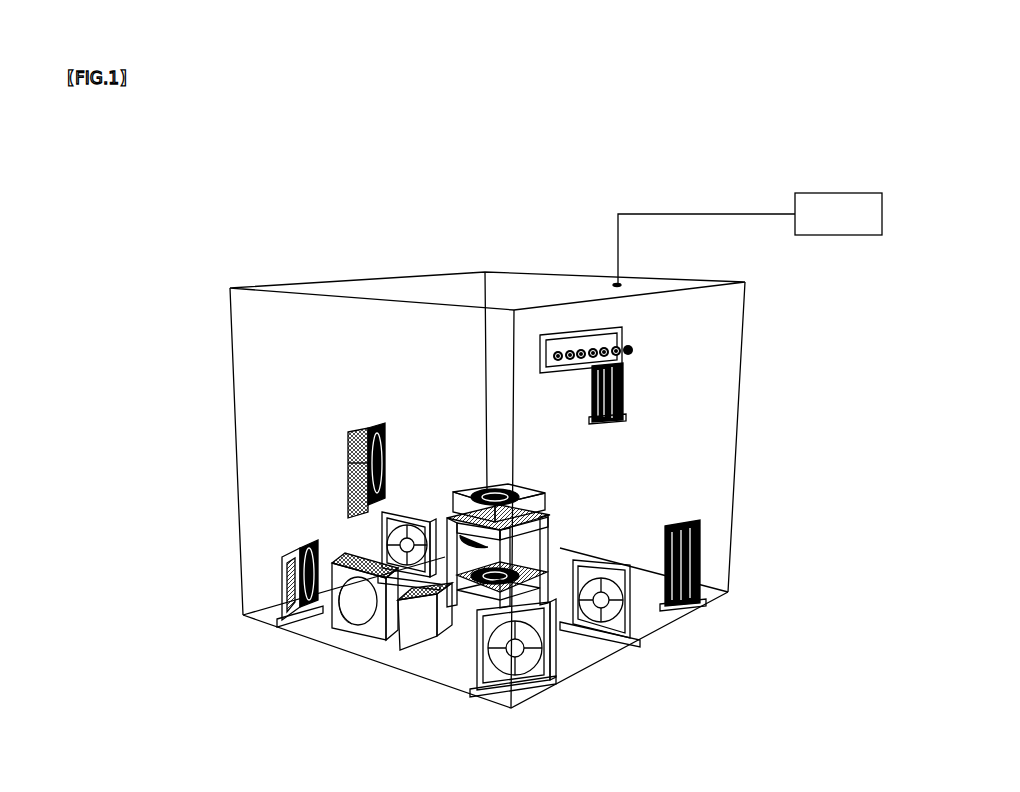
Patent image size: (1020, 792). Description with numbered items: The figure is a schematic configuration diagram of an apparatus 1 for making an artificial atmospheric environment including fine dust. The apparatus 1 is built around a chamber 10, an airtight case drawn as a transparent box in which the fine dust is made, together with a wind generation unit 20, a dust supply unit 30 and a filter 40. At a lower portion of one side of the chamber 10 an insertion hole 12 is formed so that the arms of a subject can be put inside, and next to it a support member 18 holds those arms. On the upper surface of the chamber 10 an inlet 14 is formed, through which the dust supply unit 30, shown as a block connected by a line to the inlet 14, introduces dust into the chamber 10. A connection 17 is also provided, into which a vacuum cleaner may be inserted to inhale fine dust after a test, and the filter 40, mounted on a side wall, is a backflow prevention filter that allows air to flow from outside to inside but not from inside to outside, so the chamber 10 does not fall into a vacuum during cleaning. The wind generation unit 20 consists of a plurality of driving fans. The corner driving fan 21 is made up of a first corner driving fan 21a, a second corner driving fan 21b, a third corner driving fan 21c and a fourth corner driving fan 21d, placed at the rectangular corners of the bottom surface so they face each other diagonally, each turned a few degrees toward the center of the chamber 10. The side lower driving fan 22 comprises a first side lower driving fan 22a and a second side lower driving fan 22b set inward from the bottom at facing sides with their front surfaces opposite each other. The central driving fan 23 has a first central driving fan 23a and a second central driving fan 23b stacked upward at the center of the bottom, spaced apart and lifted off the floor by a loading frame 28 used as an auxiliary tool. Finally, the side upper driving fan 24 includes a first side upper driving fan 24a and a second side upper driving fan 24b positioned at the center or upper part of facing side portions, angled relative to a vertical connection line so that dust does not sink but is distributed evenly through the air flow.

The apparatus for making artificial atmospheric environment 1 is at (180, 224).
The chamber 10 is at (487, 444).
The insertion hole 12 is at (360, 612).
The inlet 14 is at (612, 282).
The connection 17 is at (527, 487).
The support member 18 is at (428, 632).
The wind generation unit 20 is at (138, 704).
The corner driving fan 21 is at (632, 741).
The first corner driving fan 21a is at (543, 670).
The second corner driving fan 21b is at (283, 590).
The third corner driving fan 21c is at (460, 490).
The fourth corner driving fan 21d is at (700, 563).
The side lower driving fan 22 is at (137, 523).
The first side lower driving fan 22a is at (380, 540).
The second side lower driving fan 22b is at (637, 623).
The central driving fan 23 is at (848, 505).
The first central driving fan 23a is at (558, 556).
The second central driving fan 23b is at (537, 503).
The side upper driving fan 24 is at (157, 426).
The first side upper driving fan 24a is at (348, 463).
The second side upper driving fan 24b is at (616, 387).
The loading frame 28 is at (480, 600).
The dust supply unit 30 is at (750, 238).
The filter 40 is at (623, 347).